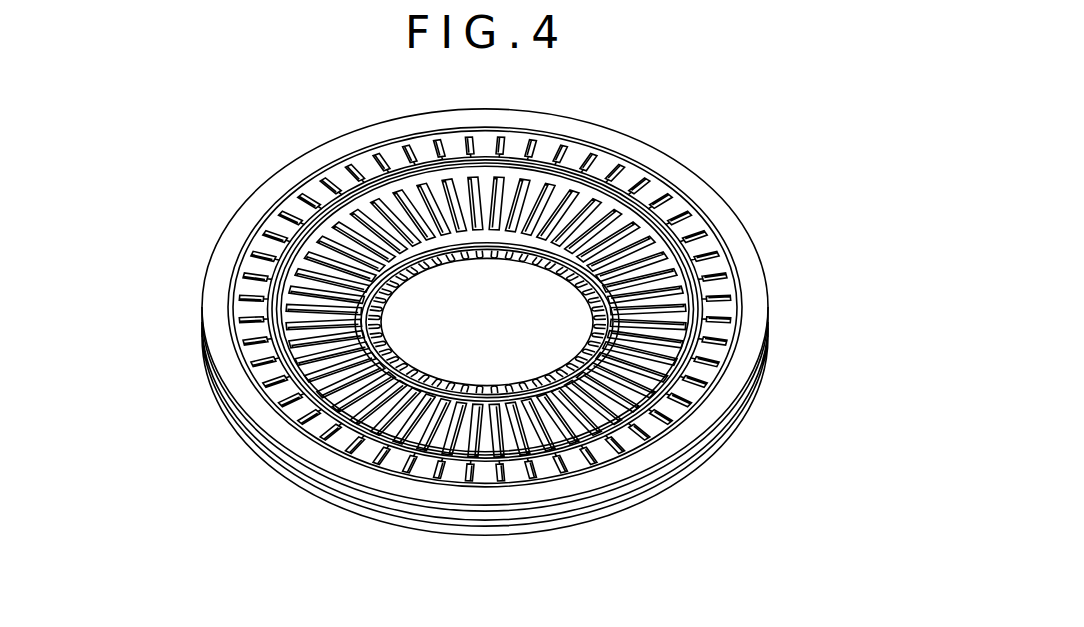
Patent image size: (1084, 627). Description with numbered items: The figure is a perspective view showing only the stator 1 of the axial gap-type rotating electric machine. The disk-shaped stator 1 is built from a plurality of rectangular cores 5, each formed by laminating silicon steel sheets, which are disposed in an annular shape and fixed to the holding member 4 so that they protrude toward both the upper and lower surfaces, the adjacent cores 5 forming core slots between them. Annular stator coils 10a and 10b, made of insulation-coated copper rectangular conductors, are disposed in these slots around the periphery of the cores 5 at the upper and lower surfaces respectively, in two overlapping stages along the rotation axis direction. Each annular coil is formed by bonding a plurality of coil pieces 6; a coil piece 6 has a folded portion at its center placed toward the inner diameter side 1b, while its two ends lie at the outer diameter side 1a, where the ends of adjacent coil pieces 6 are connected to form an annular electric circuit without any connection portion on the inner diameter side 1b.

The stator 1 is at (281, 512).
The outer diameter side 1a is at (631, 515).
The inner diameter side 1b is at (580, 440).
The holding member 4 is at (218, 278).
The core 5 is at (477, 490).
The coil piece 6 is at (740, 290).
The stator coil 10a is at (697, 220).
The stator coil 10b is at (540, 378).